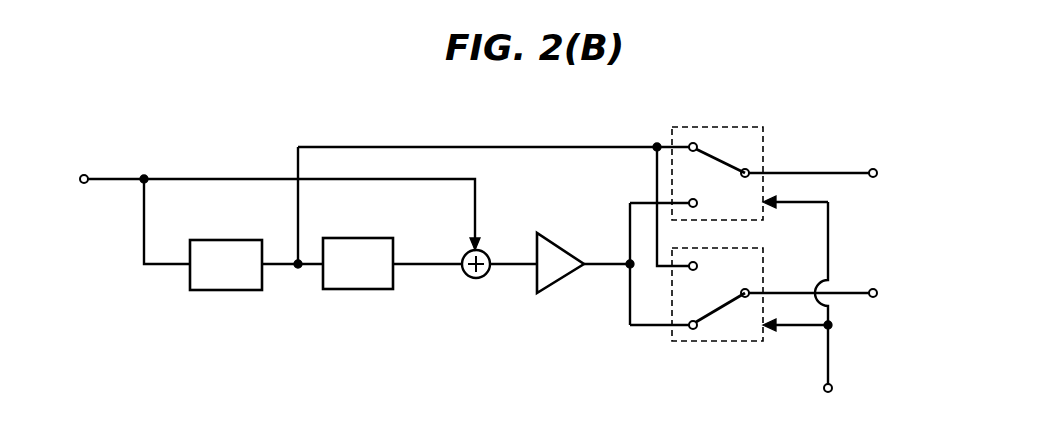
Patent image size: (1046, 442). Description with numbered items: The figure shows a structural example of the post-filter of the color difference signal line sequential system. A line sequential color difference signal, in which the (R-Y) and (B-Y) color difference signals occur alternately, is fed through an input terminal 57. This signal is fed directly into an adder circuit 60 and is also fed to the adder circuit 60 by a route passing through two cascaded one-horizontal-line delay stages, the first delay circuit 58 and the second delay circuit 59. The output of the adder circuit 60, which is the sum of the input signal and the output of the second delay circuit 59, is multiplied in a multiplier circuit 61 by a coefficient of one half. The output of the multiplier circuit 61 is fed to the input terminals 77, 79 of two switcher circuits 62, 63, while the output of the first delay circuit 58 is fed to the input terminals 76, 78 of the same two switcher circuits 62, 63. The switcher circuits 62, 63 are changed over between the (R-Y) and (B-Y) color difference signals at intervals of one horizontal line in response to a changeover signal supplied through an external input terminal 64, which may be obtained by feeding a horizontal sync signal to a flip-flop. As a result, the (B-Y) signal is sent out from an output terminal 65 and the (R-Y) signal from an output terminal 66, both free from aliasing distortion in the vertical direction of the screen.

The input terminal 57 is at (87, 171).
The 1H delay circuit 58 is at (218, 239).
The 1H delay circuit 59 is at (352, 238).
The adder circuit 60 is at (486, 251).
The multiplier circuit 61 is at (546, 233).
The switcher circuit 62 is at (733, 127).
The switcher circuit 63 is at (730, 342).
The external input terminal 64 is at (829, 393).
The output terminal 65 is at (873, 168).
The output terminal 66 is at (873, 288).
The input terminal 76 is at (690, 143).
The input terminal 77 is at (690, 200).
The input terminal 78 is at (694, 271).
The input terminal 79 is at (693, 330).